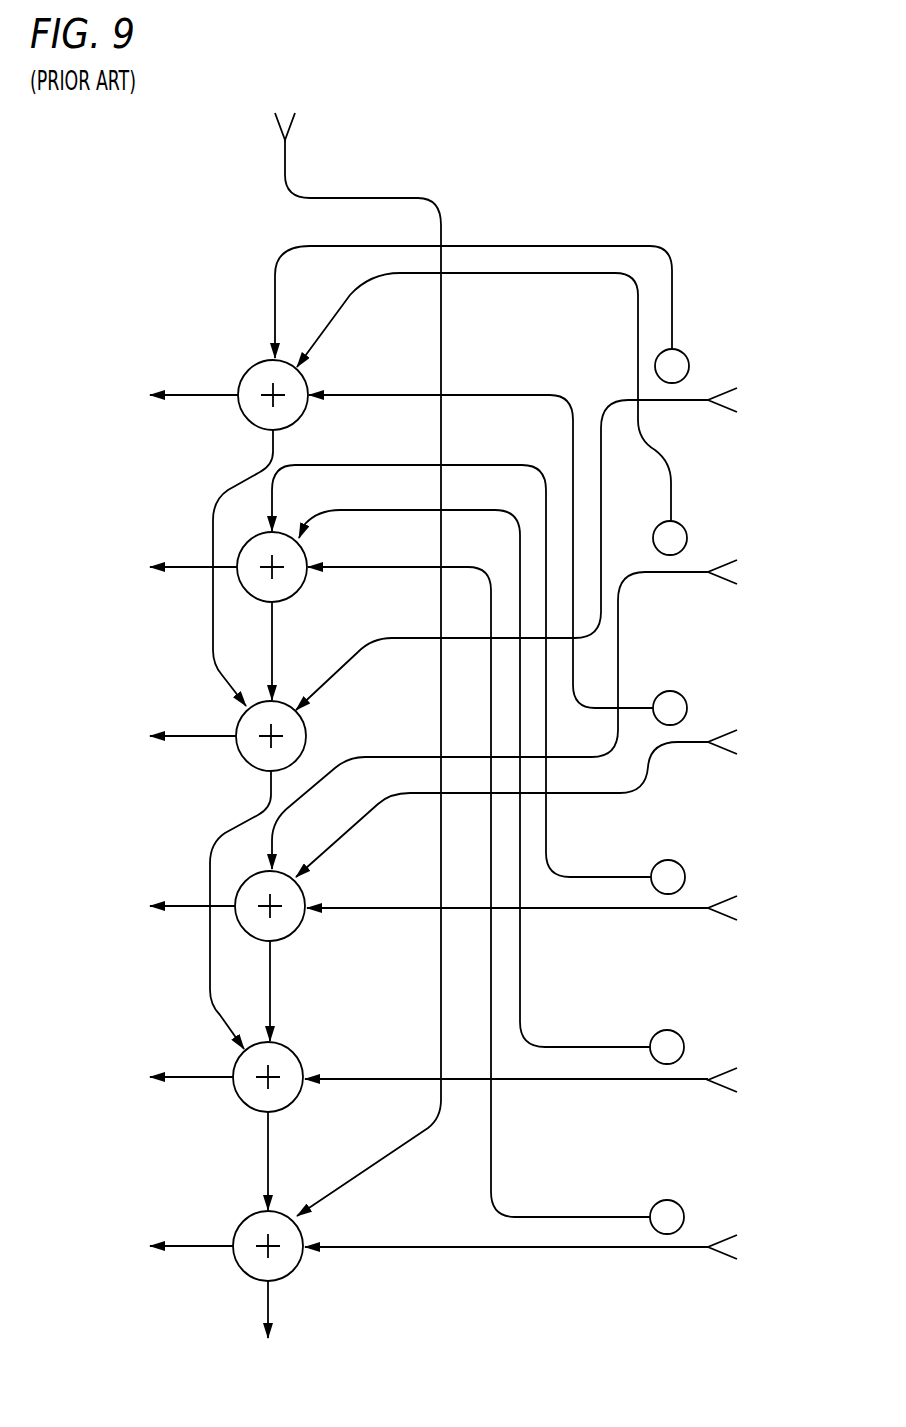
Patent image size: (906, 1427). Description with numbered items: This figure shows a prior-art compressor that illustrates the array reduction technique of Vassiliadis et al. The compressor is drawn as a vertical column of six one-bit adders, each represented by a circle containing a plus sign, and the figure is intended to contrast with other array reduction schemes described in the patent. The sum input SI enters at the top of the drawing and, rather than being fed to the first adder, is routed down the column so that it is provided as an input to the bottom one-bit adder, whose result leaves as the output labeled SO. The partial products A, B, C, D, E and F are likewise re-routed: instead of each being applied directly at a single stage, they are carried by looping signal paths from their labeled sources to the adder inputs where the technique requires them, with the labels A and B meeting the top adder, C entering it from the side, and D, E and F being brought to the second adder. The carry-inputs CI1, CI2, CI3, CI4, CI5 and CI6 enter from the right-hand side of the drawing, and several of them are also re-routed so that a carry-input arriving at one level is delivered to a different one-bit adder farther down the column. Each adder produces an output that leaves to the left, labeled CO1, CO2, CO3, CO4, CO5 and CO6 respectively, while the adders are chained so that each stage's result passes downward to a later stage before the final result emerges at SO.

The sum input SI is at (357, 648).
The sum output SO is at (269, 1330).
The partial product A is at (471, 314).
The partial product B is at (492, 414).
The partial product C is at (498, 548).
The partial product D is at (478, 663).
The partial product E is at (491, 770).
The partial product F is at (496, 887).
The carry output 1 CO1 is at (173, 398).
The carry output 2 CO2 is at (172, 570).
The carry output 3 CO3 is at (172, 739).
The carry output 4 CO4 is at (170, 909).
The carry output 5 CO5 is at (168, 1080).
The carry output 6 CO6 is at (168, 1249).
The carry-input CI1 is at (549, 549).
The carry-input CI2 is at (537, 714).
The carry-input CI3 is at (549, 803).
The carry-input CI4 is at (554, 915).
The carry-input CI5 is at (552, 1085).
The carry-input CI6 is at (552, 1253).